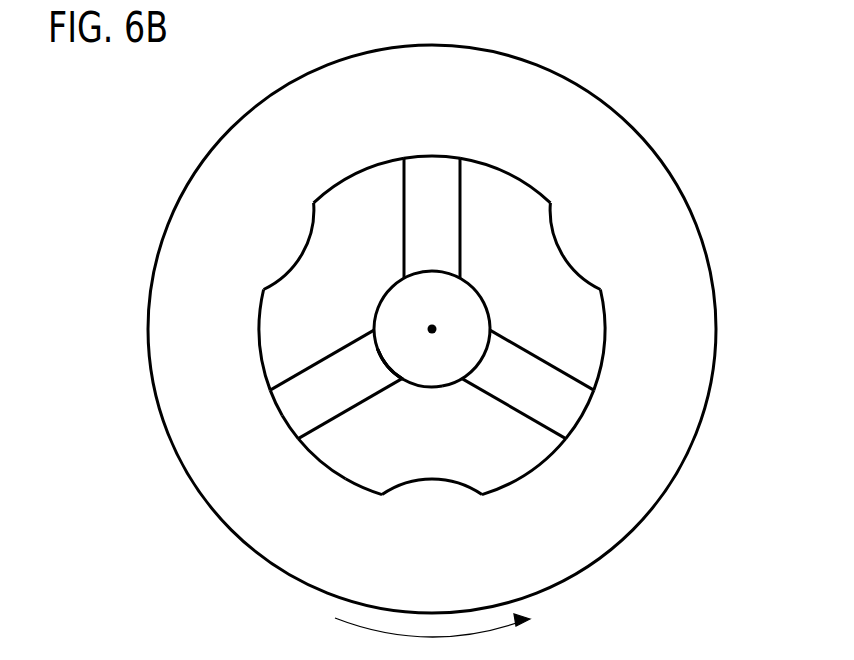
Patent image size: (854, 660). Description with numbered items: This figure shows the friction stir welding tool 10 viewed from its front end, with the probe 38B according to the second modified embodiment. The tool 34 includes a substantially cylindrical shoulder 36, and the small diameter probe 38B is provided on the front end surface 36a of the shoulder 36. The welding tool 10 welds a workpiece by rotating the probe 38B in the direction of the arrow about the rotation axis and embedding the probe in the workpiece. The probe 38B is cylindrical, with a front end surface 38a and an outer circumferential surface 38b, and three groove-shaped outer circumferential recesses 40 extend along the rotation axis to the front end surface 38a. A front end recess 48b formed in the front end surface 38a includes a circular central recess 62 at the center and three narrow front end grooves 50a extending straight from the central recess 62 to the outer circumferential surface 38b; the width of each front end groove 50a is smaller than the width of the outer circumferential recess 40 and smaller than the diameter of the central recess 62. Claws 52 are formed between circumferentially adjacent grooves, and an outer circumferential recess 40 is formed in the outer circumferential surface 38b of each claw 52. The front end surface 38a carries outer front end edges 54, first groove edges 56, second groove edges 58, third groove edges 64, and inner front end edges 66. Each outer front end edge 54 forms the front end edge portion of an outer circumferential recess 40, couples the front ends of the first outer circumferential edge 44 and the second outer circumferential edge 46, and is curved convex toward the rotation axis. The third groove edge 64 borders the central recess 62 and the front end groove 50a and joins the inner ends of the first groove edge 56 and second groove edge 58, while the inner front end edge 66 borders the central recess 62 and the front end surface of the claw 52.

The welding tool 10 is at (98, 94).
The tool 34 is at (134, 94).
The shoulder 36 is at (633, 123).
The front end surface of the shoulder 36a is at (640, 175).
The probe 38B is at (517, 168).
The front end surface 38a is at (343, 468).
The outer circumferential surface 38b is at (367, 493).
The outer circumferential recess 40 is at (283, 264).
The first outer circumferential edge 44 is at (264, 290).
The second outer circumferential edge 46 is at (314, 203).
The front end recess 48b is at (565, 405).
The front end groove 50a is at (311, 380).
The claw 52 is at (497, 476).
The outer front end edge 54 is at (310, 248).
The first groove edge 56 is at (300, 425).
The second groove edge 58 is at (278, 393).
The central recess 62 is at (432, 288).
The third groove edge 64 is at (377, 353).
The inner front end edge 66 is at (432, 387).